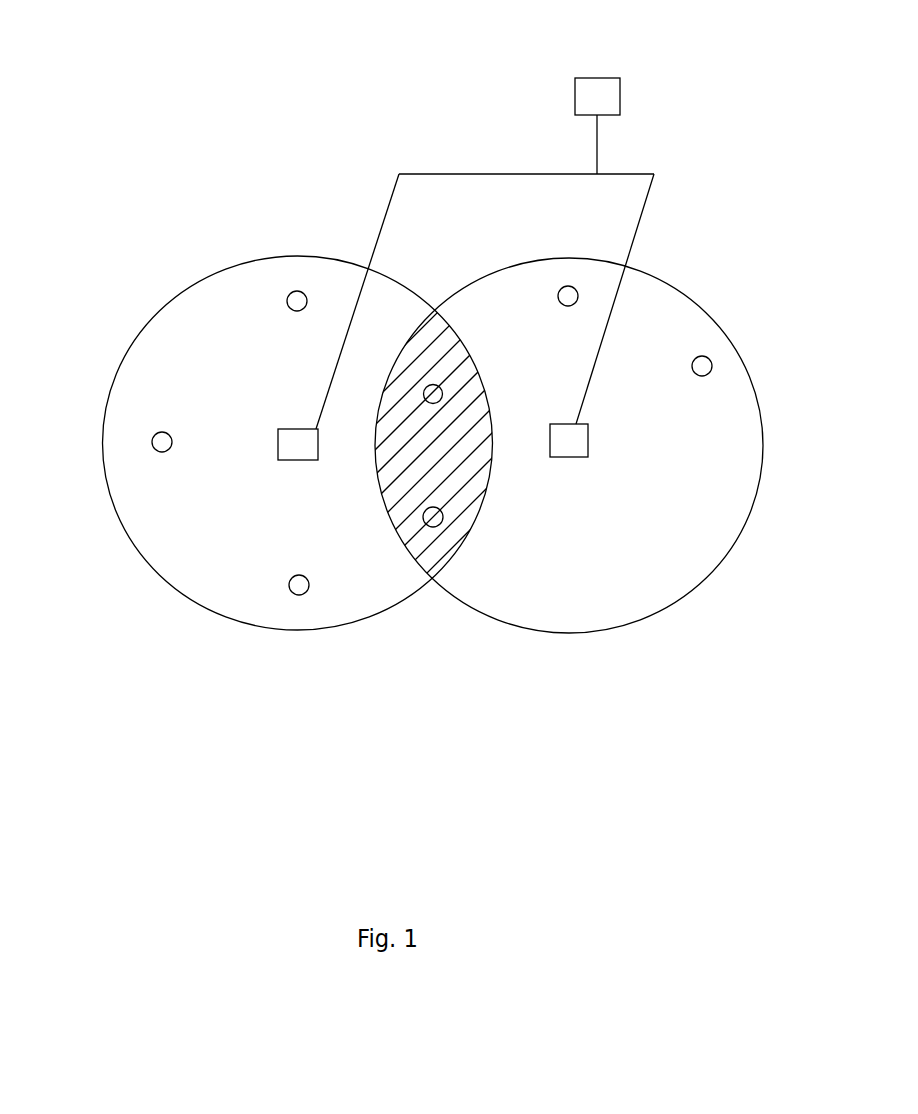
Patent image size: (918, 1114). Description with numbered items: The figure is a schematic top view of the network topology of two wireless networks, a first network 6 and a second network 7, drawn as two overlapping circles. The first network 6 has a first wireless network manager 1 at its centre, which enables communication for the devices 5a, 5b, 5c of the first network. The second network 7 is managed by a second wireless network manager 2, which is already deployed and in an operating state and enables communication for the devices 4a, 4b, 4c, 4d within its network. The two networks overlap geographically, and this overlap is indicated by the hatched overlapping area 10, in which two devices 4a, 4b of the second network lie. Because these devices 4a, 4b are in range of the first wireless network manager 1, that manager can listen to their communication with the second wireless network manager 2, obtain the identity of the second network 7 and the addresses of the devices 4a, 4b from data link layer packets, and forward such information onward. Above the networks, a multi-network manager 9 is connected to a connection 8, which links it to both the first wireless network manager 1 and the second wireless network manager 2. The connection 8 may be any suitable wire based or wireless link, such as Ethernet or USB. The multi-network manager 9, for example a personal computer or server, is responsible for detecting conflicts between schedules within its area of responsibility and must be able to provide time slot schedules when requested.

The first wireless network manager 1 is at (282, 430).
The second wireless network manager 2 is at (588, 424).
The device 4a is at (443, 517).
The device 4b is at (443, 392).
The device 4c is at (568, 286).
The device 4d is at (711, 360).
The device 5a is at (297, 291).
The device 5b is at (152, 442).
The device 5c is at (292, 592).
The first network 6 is at (146, 330).
The second network 7 is at (541, 633).
The connection 8 is at (519, 174).
The multi-network manager 9 is at (596, 78).
The overlapping area 10 is at (400, 490).